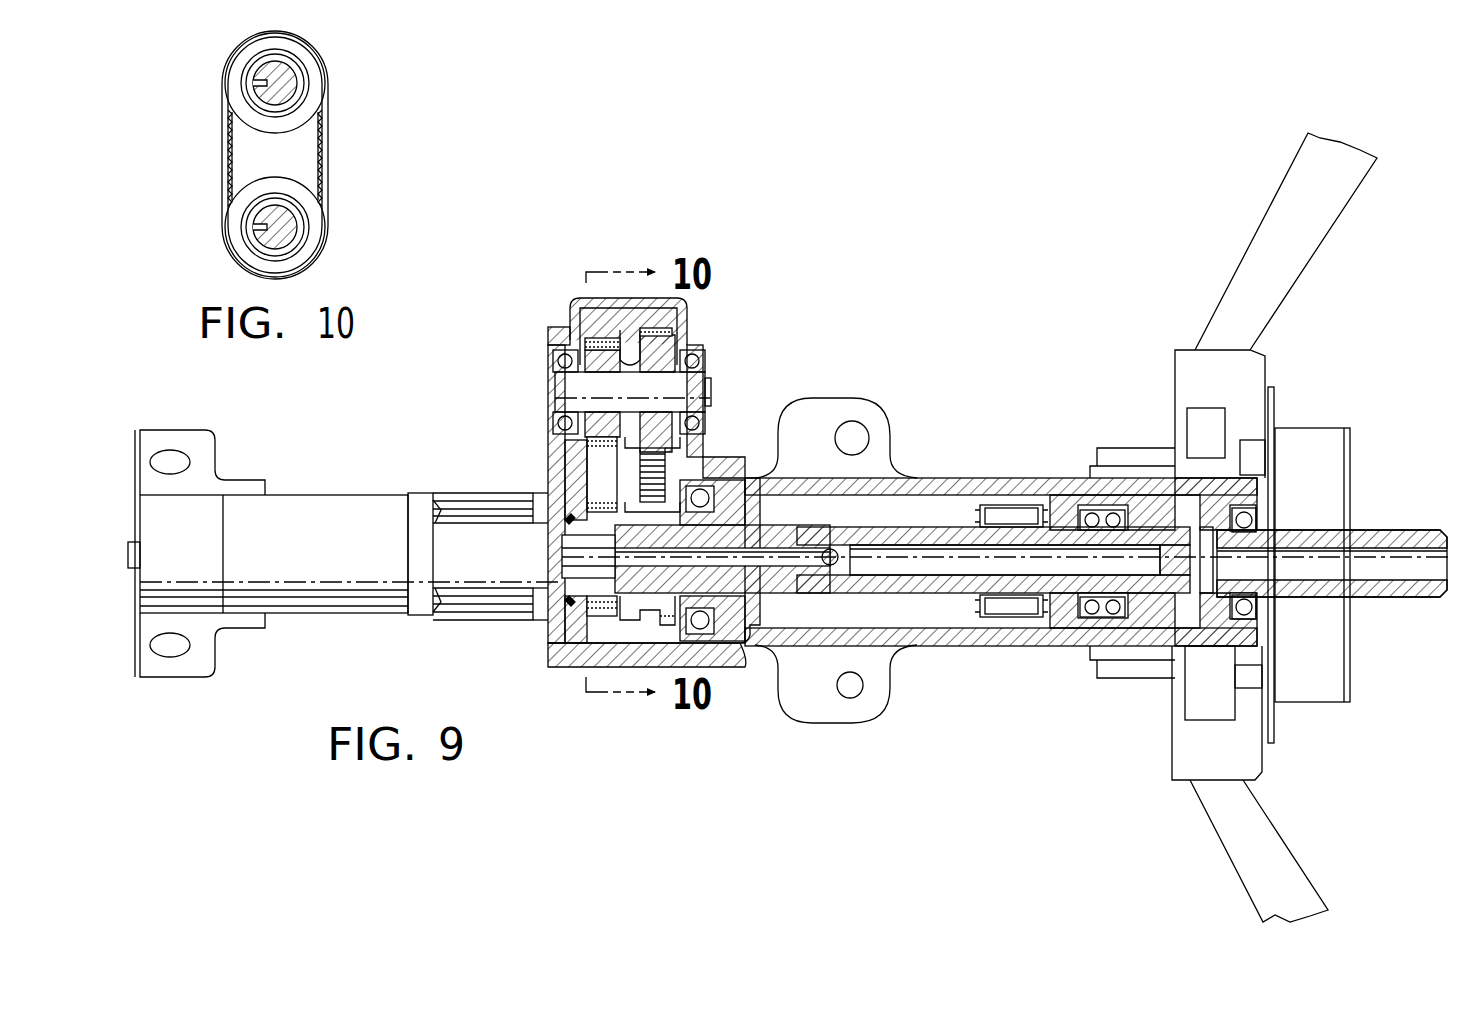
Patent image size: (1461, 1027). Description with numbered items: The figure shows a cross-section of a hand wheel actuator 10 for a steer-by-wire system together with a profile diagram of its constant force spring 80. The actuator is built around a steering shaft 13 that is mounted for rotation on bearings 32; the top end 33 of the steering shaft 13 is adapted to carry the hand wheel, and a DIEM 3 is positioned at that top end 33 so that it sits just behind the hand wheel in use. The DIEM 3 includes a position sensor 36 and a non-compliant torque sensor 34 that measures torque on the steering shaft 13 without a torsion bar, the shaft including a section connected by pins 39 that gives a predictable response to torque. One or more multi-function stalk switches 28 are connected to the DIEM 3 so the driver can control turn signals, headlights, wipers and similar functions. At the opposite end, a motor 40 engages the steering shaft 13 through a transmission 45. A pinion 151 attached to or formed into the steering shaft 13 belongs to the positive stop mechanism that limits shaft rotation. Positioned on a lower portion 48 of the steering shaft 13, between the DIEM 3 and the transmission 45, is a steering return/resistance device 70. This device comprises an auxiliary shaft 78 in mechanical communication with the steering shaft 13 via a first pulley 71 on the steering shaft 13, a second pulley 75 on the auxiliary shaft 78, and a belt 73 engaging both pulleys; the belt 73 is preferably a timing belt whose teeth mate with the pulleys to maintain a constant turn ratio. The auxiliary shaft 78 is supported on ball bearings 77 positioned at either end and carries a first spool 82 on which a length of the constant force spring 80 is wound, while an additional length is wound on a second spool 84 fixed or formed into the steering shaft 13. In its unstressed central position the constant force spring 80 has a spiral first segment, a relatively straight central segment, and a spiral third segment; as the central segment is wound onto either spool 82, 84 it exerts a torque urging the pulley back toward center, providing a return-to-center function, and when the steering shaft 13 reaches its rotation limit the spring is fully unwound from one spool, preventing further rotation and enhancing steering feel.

In FIG. 9, the DIEM 3 is at (1134, 743).
In FIG. 9, the hand wheel actuator 10 is at (833, 236).
In FIG. 9, the steering shaft 13 is at (913, 527).
In FIG. 9, the multi-function stalk switches 28 is at (1230, 298).
In FIG. 9, the bearings 32 is at (1250, 518).
In FIG. 9, the top end 33 is at (1420, 600).
In FIG. 9, the torque sensor 34 is at (992, 508).
In FIG. 9, the position sensor 36 is at (1331, 475).
In FIG. 9, the pins 39 is at (850, 578).
In FIG. 9, the motor 40 is at (313, 559).
In FIG. 9, the transmission 45 is at (455, 480).
In FIG. 10, the lower portion 48 is at (293, 240).
In FIG. 9, the lower portion 48 is at (758, 652).
In FIG. 9, the steering return/resistance device 70 is at (714, 305).
In FIG. 9, the first pulley 71 is at (702, 634).
In FIG. 10, the belt 73 is at (328, 167).
In FIG. 9, the belt 73 is at (655, 470).
In FIG. 9, the second pulley 75 is at (675, 358).
In FIG. 9, the bearing 77 is at (560, 350).
In FIG. 10, the auxiliary shaft 78 is at (300, 75).
In FIG. 9, the auxiliary shaft 78 is at (690, 380).
In FIG. 10, the constant force spring 80 is at (330, 143).
In FIG. 9, the constant force spring 80 is at (598, 468).
In FIG. 9, the first spool 82 is at (600, 350).
In FIG. 9, the second spool 84 is at (562, 600).
In FIG. 9, the pinion 151 is at (757, 480).